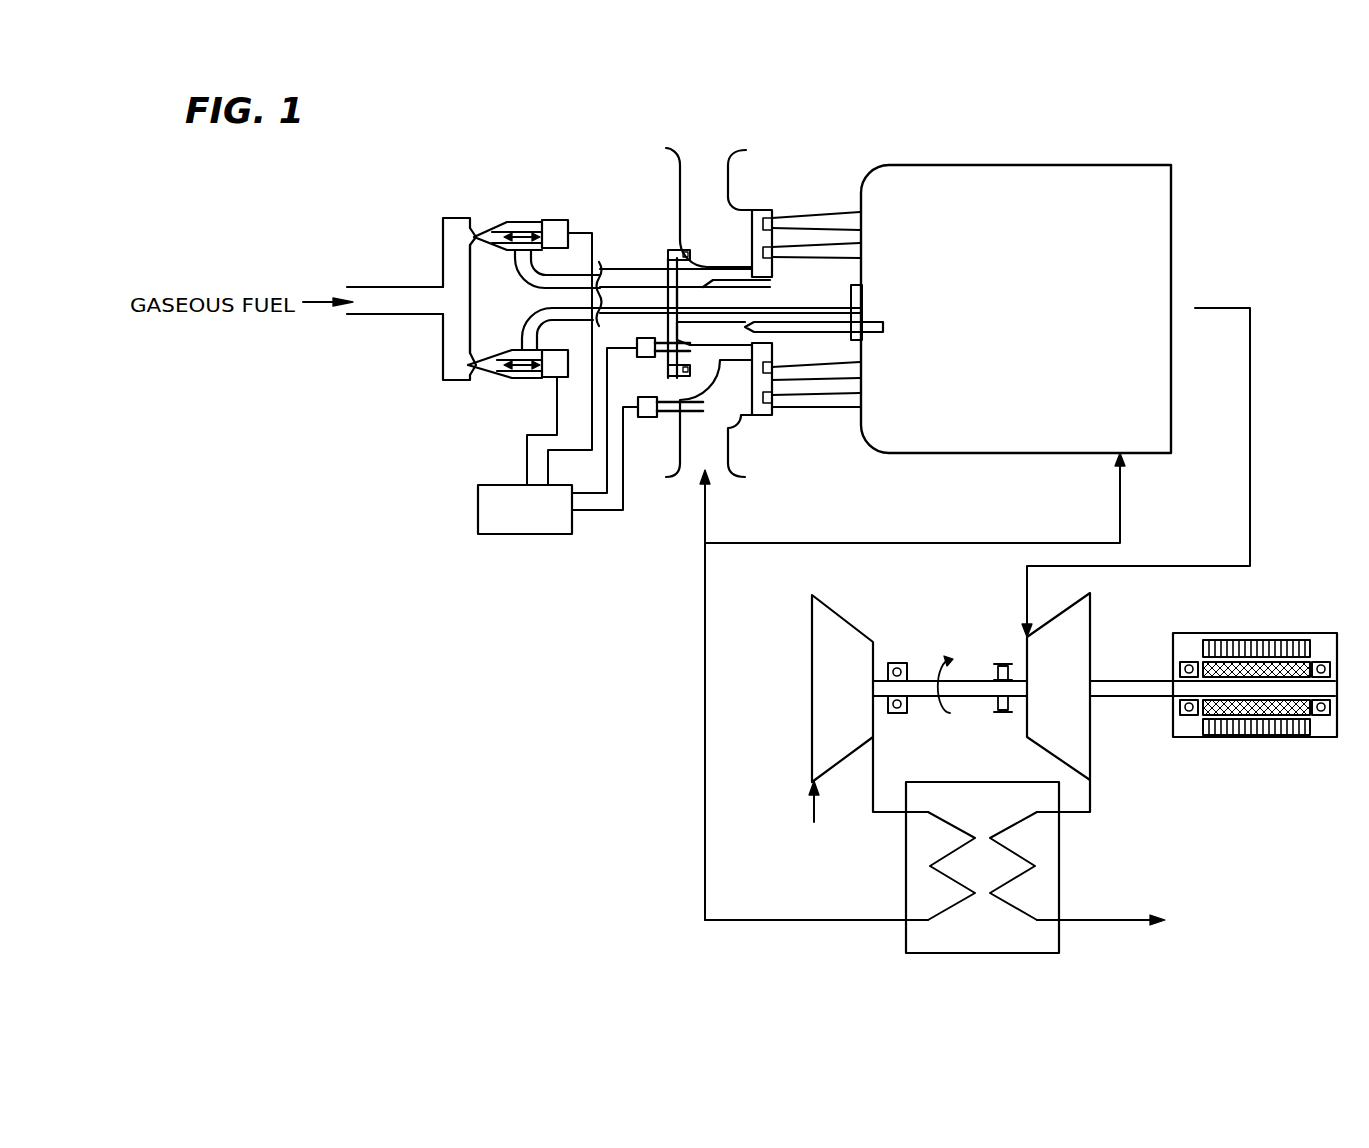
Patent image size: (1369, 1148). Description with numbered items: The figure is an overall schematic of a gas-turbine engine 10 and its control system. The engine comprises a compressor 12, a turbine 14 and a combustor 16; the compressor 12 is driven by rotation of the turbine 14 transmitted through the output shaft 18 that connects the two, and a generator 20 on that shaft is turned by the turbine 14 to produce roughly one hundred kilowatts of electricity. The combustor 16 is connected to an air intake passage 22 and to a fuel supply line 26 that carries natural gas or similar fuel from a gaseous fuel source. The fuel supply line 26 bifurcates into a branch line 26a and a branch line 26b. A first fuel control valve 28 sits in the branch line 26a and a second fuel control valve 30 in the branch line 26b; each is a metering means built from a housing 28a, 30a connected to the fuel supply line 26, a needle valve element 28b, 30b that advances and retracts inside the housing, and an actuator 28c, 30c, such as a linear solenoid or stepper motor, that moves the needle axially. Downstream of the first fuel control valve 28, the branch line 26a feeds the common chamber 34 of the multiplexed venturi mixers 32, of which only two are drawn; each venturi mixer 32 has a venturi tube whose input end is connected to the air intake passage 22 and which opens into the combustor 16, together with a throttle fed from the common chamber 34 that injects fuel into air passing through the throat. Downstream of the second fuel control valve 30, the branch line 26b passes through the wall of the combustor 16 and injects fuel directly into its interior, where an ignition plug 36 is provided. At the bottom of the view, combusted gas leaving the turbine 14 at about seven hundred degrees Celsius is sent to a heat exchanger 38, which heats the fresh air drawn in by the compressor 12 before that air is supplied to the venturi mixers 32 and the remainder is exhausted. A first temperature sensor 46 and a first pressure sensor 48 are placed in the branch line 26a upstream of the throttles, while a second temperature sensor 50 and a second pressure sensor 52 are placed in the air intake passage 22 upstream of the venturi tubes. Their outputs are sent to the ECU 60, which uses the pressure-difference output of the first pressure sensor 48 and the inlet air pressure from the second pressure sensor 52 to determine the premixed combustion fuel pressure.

The gas-turbine engine 10 is at (1215, 280).
The compressor 12 is at (852, 706).
The turbine 14 is at (1066, 706).
The combustor 16 is at (1171, 197).
The output shaft 18 is at (965, 679).
The generator 20 is at (1237, 633).
The air intake passage 22 is at (752, 152).
The fuel supply line 26 is at (372, 286).
The branch line 26a is at (442, 237).
The branch line 26b is at (452, 383).
The first fuel control valve 28 is at (495, 213).
The housing 28a is at (518, 217).
The needle valve element 28b is at (497, 244).
The actuator 28c is at (560, 219).
The second fuel control valve 30 is at (493, 388).
The housing 30a is at (512, 383).
The needle valve element 30b is at (493, 352).
The actuator 30c is at (575, 346).
The venturi mixer 32 is at (790, 192).
The common chamber 34 is at (770, 280).
The ignition plug 36 is at (868, 322).
The heat exchanger 38 is at (985, 782).
The first temperature sensor 46 is at (637, 340).
The first pressure sensor 48 is at (645, 357).
The second temperature sensor 50 is at (638, 403).
The second pressure sensor 52 is at (648, 417).
The ECU 60 is at (538, 534).